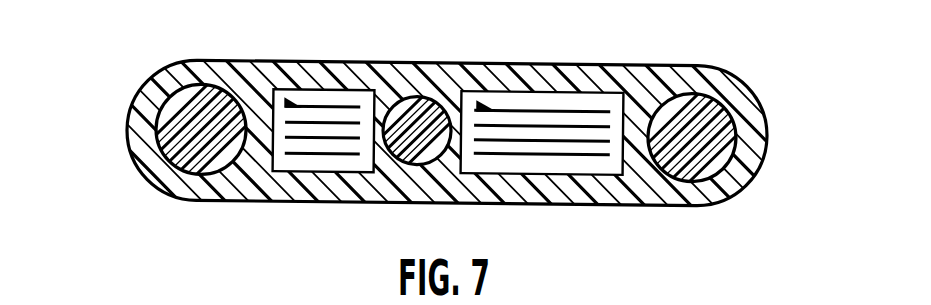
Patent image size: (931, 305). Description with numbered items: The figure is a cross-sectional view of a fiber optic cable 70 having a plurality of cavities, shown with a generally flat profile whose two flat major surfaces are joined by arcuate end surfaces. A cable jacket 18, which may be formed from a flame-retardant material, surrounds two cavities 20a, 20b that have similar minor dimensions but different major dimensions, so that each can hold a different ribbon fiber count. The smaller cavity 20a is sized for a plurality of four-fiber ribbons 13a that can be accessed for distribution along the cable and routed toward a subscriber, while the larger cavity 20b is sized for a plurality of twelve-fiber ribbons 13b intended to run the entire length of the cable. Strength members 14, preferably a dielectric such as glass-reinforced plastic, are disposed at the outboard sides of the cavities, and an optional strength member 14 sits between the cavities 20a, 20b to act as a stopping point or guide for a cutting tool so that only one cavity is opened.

The cable 70 is at (465, 128).
The cable jacket 18 is at (465, 145).
The strength member 14 is at (447, 132).
The cavity 20a is at (324, 130).
The cavity 20b is at (542, 133).
The 4-fiber ribbons 13a is at (322, 125).
The 12-fiber ribbons 13b is at (542, 127).